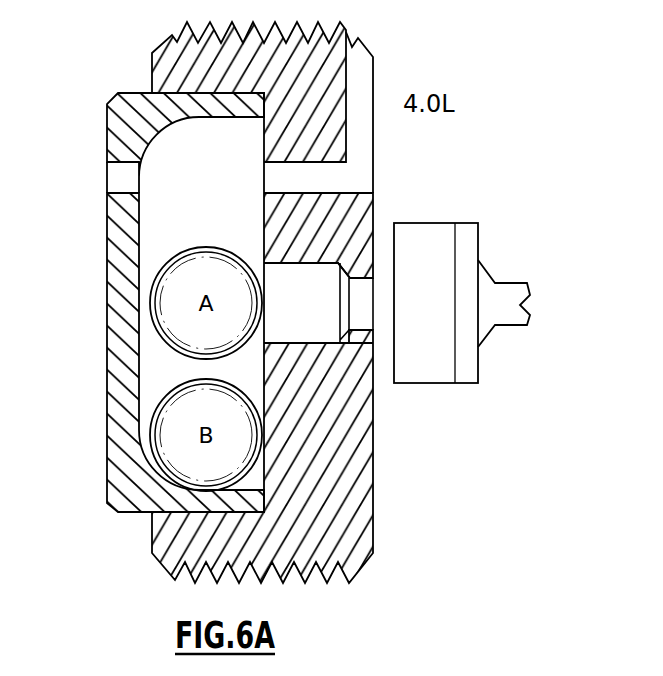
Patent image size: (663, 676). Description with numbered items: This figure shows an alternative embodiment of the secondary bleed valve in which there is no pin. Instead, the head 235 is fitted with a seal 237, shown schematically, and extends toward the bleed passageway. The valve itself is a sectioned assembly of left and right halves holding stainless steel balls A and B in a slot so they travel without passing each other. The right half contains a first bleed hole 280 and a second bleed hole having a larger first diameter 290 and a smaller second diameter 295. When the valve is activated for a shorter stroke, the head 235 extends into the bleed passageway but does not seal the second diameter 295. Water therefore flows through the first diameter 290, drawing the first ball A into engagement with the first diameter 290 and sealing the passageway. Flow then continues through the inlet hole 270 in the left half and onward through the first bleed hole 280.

The inlet hole 270 is at (125, 179).
The first bleed hole 280 is at (325, 180).
The first diameter 290 is at (218, 303).
The second diameter 295 is at (358, 310).
The seal 237 is at (418, 247).
The head 235 is at (489, 273).